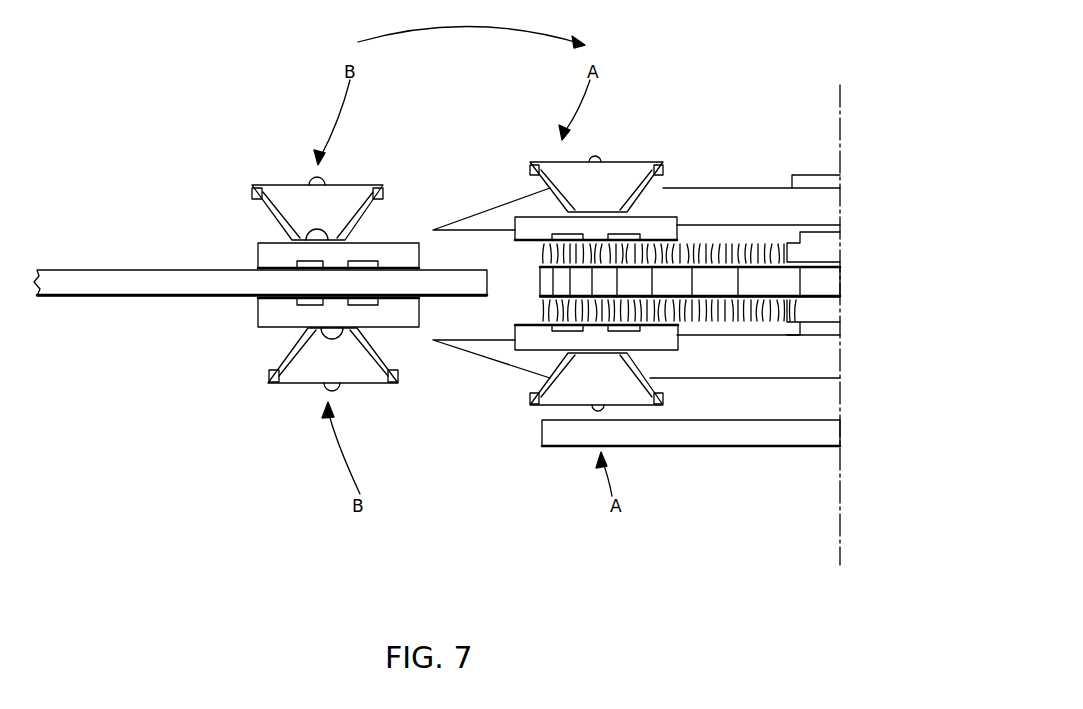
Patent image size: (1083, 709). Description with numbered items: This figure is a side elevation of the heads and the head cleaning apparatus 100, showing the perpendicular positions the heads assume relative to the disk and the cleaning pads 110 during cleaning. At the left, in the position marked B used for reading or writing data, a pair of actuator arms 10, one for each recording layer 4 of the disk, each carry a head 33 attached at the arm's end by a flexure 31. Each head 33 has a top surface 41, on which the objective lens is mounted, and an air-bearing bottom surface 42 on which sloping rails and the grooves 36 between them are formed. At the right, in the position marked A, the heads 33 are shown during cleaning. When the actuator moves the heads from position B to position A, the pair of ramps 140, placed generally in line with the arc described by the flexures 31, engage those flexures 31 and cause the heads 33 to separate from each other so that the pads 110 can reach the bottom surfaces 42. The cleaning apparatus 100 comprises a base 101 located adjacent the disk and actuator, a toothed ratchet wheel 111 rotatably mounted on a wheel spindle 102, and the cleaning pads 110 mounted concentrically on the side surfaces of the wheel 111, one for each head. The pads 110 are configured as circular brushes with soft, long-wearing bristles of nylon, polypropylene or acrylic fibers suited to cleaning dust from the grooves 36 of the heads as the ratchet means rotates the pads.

The recording layer 4 is at (115, 270).
The actuator arm 10 is at (257, 200).
The flexure 31 is at (300, 212).
The head 33 is at (258, 258).
The groove 36 is at (380, 242).
The top surface 41 is at (393, 243).
The bottom surface 42 is at (454, 286).
The head cleaning apparatus 100 is at (862, 318).
The base 101 is at (542, 432).
The wheel spindle 102 is at (822, 172).
The cleaning pad 110 is at (768, 243).
The toothed wheel 111 is at (842, 284).
The ramp 140 is at (497, 218).